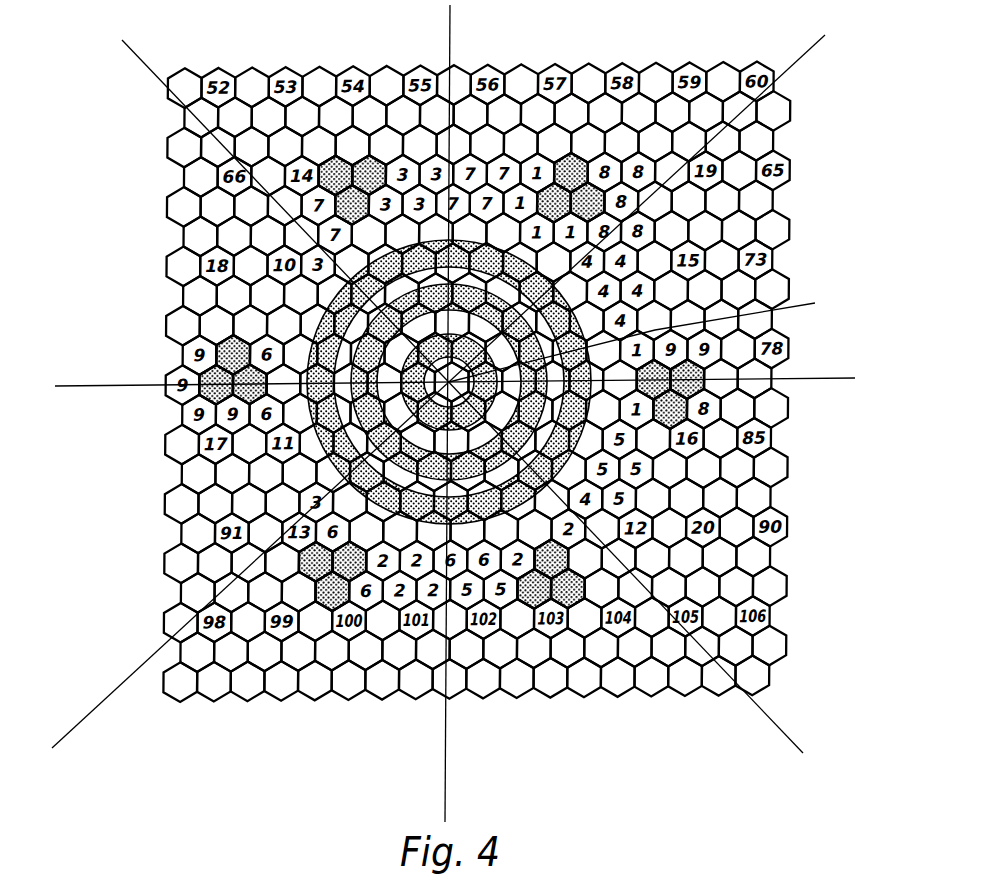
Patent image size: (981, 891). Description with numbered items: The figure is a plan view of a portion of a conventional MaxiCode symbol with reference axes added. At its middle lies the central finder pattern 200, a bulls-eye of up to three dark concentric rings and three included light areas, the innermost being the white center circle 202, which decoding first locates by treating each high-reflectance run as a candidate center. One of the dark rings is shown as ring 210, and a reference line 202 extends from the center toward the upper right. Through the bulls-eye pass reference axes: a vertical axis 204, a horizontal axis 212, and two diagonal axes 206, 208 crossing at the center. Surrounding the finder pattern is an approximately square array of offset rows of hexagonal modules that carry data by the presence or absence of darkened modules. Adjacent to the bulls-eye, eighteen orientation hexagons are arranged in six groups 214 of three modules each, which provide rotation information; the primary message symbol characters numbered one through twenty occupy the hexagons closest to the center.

The central finder pattern 200 is at (449, 283).
The white center circle 202 is at (649, 336).
The vertical axis line 204 is at (445, 806).
The diagonal axis line 206 is at (790, 738).
The diagonal axis line 208 is at (62, 737).
The intermediate stippled ring 210 is at (381, 477).
The horizontal axis line 212 is at (820, 380).
The orientation hexagon groups 214 is at (326, 158).